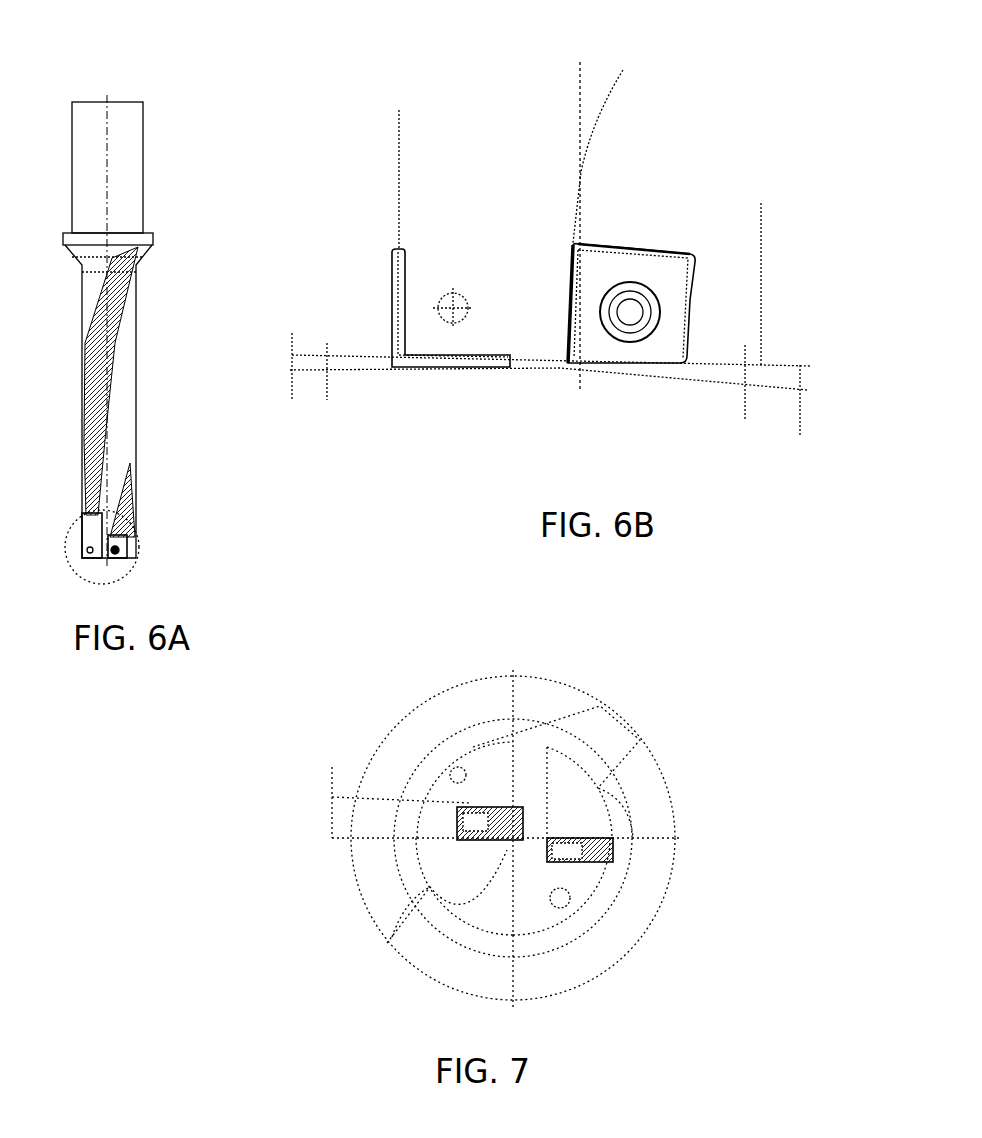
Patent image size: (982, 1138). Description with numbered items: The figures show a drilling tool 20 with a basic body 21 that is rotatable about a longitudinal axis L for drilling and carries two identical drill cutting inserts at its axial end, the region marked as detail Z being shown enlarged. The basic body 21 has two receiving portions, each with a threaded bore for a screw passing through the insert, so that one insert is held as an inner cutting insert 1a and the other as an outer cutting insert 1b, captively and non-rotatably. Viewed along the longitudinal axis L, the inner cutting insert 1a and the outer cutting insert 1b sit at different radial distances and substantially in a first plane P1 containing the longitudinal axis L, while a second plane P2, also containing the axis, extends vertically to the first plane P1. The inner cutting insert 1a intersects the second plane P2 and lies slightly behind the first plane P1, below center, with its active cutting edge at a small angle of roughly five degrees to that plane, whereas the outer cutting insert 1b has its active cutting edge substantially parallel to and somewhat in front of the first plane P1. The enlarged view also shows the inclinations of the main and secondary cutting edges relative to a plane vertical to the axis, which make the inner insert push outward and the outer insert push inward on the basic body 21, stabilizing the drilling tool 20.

In FIG. 6A, the drilling tool 20 is at (186, 212).
In FIG. 7, the drilling tool 20 is at (733, 746).
In FIG. 6A, the basic body 21 is at (120, 431).
In FIG. 6B, the basic body 21 is at (458, 248).
In FIG. 7, the basic body 21 is at (483, 777).
In FIG. 6B, the inner cutting insert 1a is at (610, 355).
In FIG. 7, the inner cutting insert 1a is at (487, 823).
In FIG. 6B, the outer cutting insert 1b is at (401, 333).
In FIG. 7, the outer cutting insert 1b is at (577, 856).
In FIG. 6A, the longitudinal axis L is at (107, 138).
In FIG. 6B, the longitudinal axis L is at (580, 90).
In FIG. 7, the longitudinal axis L is at (517, 842).
In FIG. 6A, the detail Z is at (137, 558).
In FIG. 6B, the detail Z is at (745, 67).
In FIG. 7, the first plane P1 is at (657, 838).
In FIG. 7, the second plane P2 is at (515, 698).